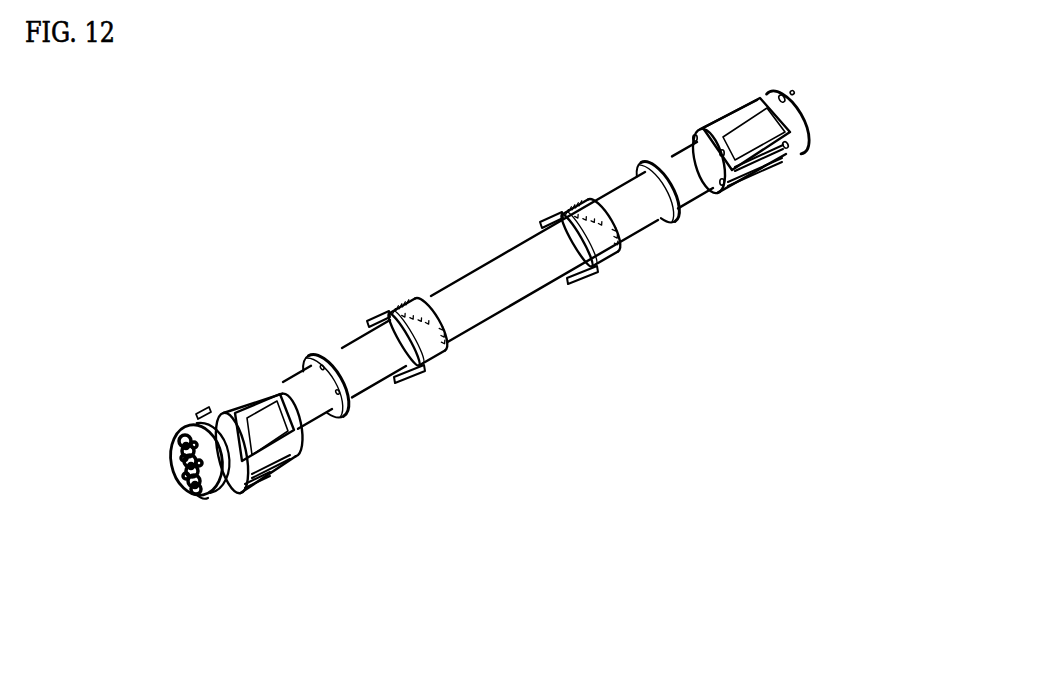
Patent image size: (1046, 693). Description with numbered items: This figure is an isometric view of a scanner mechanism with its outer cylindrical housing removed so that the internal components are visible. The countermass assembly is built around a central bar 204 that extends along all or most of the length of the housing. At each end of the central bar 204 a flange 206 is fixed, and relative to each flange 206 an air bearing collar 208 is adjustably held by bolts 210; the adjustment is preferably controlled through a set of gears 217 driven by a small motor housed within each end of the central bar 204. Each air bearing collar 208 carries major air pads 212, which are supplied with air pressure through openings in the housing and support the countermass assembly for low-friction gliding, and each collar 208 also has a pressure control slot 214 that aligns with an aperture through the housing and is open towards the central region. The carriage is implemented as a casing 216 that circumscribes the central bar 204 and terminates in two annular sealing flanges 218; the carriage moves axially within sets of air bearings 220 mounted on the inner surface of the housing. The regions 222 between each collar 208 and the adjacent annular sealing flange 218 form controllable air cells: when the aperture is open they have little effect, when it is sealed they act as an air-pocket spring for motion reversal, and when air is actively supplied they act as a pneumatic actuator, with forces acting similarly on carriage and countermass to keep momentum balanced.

The central bar 204 is at (314, 398).
The flange 206 is at (200, 498).
The air bearing collar 208 is at (262, 404).
The bolts 210 is at (197, 413).
The major air pads 212 is at (246, 416).
The pressure control slot 214 is at (270, 455).
The casing 216 is at (487, 317).
The set of gears 217 is at (182, 466).
The annular sealing flange 218 is at (340, 405).
The air bearings 220 is at (396, 314).
The region 222 is at (268, 384).